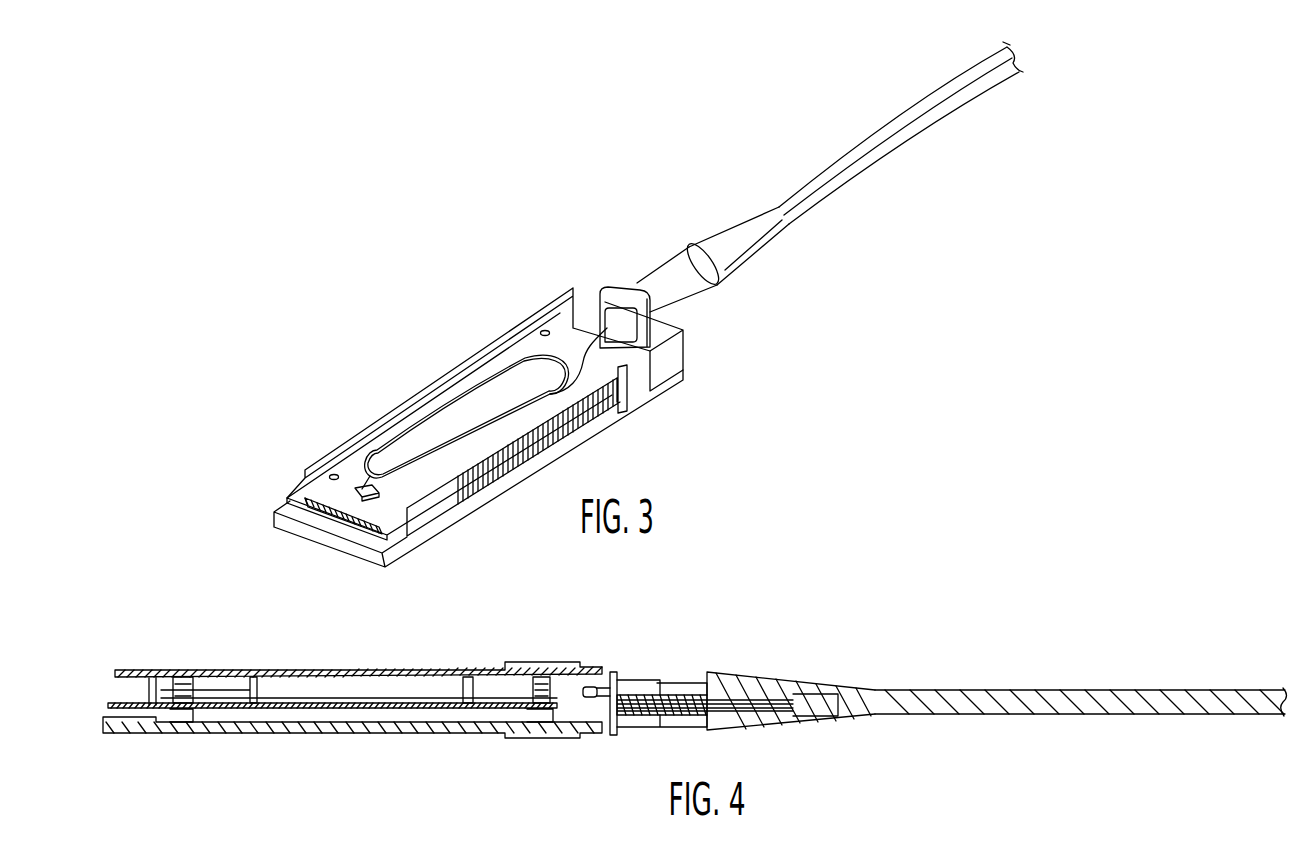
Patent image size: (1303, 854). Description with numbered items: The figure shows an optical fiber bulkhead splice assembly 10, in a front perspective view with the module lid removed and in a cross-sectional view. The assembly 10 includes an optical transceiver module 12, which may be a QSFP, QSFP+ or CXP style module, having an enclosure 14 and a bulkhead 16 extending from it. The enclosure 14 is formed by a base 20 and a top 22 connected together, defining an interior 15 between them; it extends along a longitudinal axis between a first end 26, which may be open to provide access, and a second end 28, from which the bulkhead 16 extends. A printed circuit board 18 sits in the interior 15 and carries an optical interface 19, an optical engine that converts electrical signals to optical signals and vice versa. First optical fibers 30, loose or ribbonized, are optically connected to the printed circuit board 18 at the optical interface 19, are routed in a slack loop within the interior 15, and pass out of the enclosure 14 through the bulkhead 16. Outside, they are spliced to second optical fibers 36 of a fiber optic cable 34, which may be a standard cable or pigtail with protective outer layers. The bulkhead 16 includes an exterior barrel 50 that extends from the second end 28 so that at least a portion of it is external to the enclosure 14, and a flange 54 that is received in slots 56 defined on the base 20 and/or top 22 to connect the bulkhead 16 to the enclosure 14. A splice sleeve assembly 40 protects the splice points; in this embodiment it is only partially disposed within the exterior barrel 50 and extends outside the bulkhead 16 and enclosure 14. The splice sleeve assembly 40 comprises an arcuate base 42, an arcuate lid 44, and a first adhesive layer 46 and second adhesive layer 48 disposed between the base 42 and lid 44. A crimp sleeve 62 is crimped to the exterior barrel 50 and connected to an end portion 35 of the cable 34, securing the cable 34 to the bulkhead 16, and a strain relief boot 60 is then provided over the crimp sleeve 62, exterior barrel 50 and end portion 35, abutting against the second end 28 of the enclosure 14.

In FIG. 3, the optical fiber bulkhead splice assembly 10 is at (525, 211).
In FIG. 4, the optical fiber bulkhead splice assembly 10 is at (730, 598).
In FIG. 3, the optical transceiver module 12 is at (570, 250).
In FIG. 4, the optical transceiver module 12 is at (596, 636).
In FIG. 3, the enclosure 14 is at (416, 365).
In FIG. 4, the enclosure 14 is at (465, 655).
In FIG. 3, the interior 15 is at (568, 322).
In FIG. 4, the interior 15 is at (408, 720).
In FIG. 3, the bulkhead 16 is at (637, 352).
In FIG. 4, the bulkhead 16 is at (620, 672).
In FIG. 3, the printed circuit board 18 is at (300, 487).
In FIG. 4, the printed circuit board 18 is at (300, 712).
In FIG. 3, the optical interface 19 is at (378, 500).
In FIG. 3, the base 20 is at (458, 500).
In FIG. 4, the base 20 is at (327, 727).
In FIG. 4, the top 22 is at (290, 670).
In FIG. 3, the first end 26 is at (312, 538).
In FIG. 4, the first end 26 is at (97, 690).
In FIG. 3, the second end 28 is at (690, 348).
In FIG. 4, the second end 28 is at (623, 745).
In FIG. 3, the first optical fibers 30 is at (388, 450).
In FIG. 4, the first optical fibers 30 is at (460, 706).
In FIG. 3, the fiber optic cable 34 is at (901, 133).
In FIG. 4, the fiber optic cable 34 is at (1008, 685).
In FIG. 4, the end portion 35 is at (778, 690).
In FIG. 4, the second optical fibers 36 is at (838, 680).
In FIG. 4, the splice sleeve assembly 40 is at (737, 722).
In FIG. 4, the base 42 is at (774, 714).
In FIG. 4, the lid 44 is at (828, 712).
In FIG. 4, the first adhesive layer 46 is at (790, 735).
In FIG. 4, the second adhesive layer 48 is at (810, 725).
In FIG. 4, the exterior barrel 50 is at (652, 680).
In FIG. 3, the flange 54 is at (650, 312).
In FIG. 4, the flange 54 is at (625, 735).
In FIG. 4, the slots 56 is at (596, 732).
In FIG. 4, the strain relief boot 60 is at (768, 668).
In FIG. 4, the crimp sleeve 62 is at (702, 680).